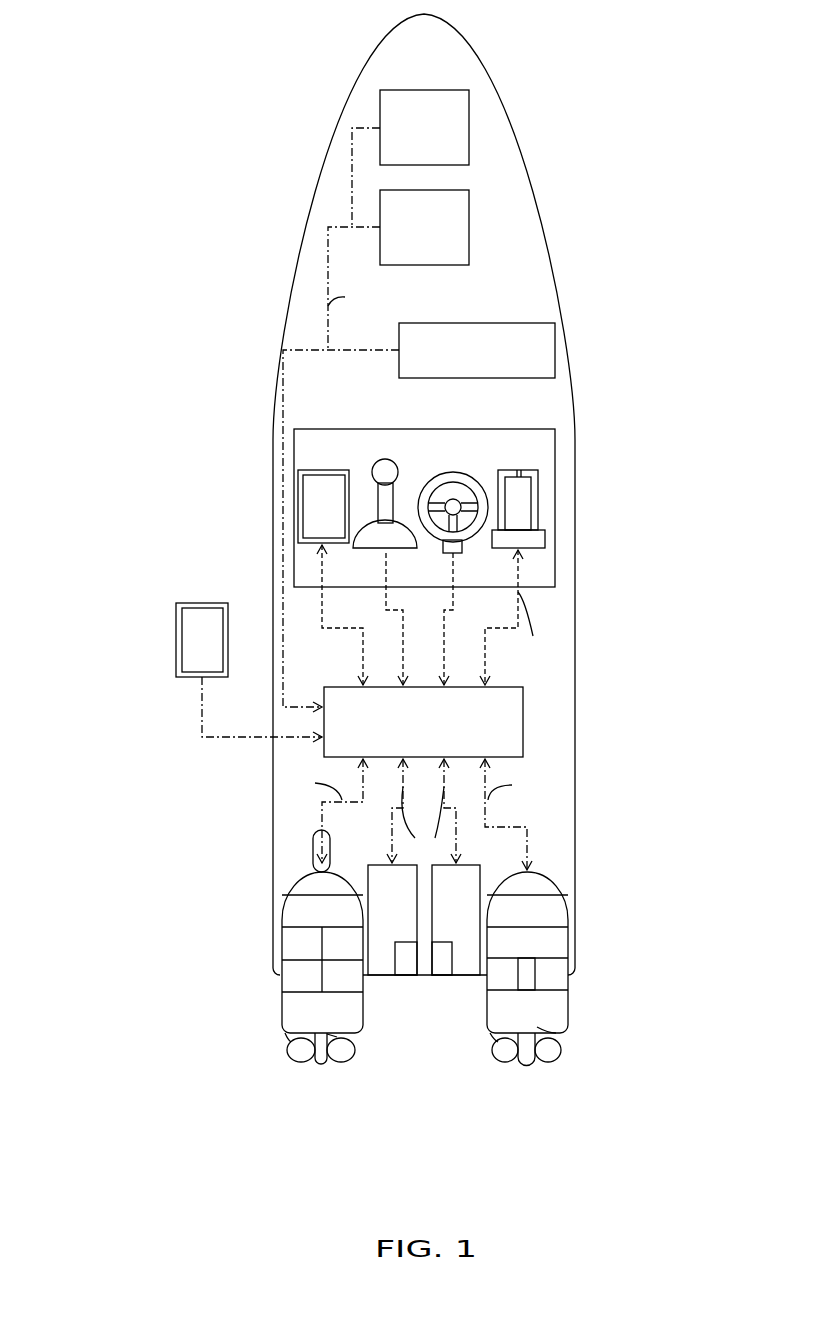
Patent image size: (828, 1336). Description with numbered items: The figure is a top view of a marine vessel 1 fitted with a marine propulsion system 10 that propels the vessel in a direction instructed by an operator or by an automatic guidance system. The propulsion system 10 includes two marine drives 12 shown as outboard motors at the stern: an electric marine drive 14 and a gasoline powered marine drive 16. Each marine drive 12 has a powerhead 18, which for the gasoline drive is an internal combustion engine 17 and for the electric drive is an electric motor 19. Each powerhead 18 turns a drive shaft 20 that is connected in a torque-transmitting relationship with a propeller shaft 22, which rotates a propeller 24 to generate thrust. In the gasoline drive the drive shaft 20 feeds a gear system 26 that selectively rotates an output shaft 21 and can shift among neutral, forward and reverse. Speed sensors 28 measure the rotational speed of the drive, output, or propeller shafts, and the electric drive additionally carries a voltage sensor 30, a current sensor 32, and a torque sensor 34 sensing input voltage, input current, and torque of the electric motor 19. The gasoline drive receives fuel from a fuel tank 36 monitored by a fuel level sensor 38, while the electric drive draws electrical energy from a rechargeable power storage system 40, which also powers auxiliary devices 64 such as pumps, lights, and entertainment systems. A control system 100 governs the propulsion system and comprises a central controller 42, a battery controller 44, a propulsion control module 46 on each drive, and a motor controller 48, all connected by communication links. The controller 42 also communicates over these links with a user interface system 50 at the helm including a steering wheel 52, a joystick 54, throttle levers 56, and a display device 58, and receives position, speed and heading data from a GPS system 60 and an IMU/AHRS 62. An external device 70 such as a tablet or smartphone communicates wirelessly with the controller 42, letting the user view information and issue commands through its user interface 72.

The marine vessel 1 is at (622, 61).
The marine propulsion system 10 is at (648, 509).
The control system 100 is at (150, 688).
The marine drive 12 is at (424, 1016).
The electric marine drive 14 is at (278, 1107).
The gasoline powered marine drive 16 is at (575, 1067).
The internal combustion engine 17 is at (527, 944).
The powerhead 18 is at (283, 1005).
The electric motor 19 is at (322, 1010).
The drive shaft 20 is at (337, 1037).
The output shaft 21 is at (537, 1027).
The propeller shaft 22 is at (318, 1067).
The propeller 24 is at (337, 1053).
The gear system 26 is at (568, 1007).
The speed sensor 28 is at (287, 1037).
The voltage sensor 30 is at (283, 980).
The current sensor 32 is at (364, 982).
The torque sensor 34 is at (283, 945).
The fuel tank 36 is at (467, 865).
The fuel level sensor 38 is at (438, 942).
The power storage system 40 is at (369, 875).
The central controller 42 is at (502, 687).
The battery controller 44 is at (407, 963).
The propulsion control module 46 is at (283, 907).
The motor controller 48 is at (363, 947).
The user interface system 50 is at (550, 419).
The steering wheel 52 is at (430, 487).
The joystick 54 is at (387, 465).
The throttle lever 56 is at (510, 470).
The display device 58 is at (309, 470).
The GPS system 60 is at (469, 228).
The IMU/AHRS 62 is at (472, 378).
The auxiliary device 64 is at (469, 128).
The external device 70 is at (203, 605).
The user interface 72 is at (197, 620).